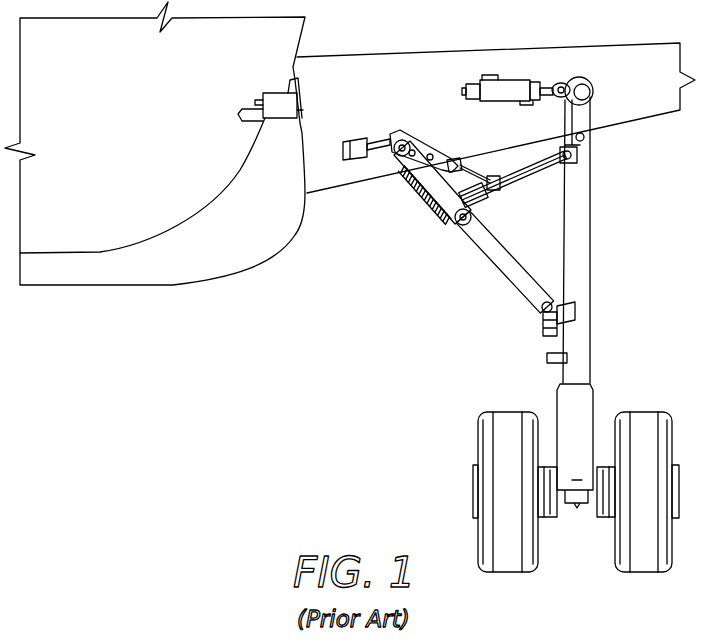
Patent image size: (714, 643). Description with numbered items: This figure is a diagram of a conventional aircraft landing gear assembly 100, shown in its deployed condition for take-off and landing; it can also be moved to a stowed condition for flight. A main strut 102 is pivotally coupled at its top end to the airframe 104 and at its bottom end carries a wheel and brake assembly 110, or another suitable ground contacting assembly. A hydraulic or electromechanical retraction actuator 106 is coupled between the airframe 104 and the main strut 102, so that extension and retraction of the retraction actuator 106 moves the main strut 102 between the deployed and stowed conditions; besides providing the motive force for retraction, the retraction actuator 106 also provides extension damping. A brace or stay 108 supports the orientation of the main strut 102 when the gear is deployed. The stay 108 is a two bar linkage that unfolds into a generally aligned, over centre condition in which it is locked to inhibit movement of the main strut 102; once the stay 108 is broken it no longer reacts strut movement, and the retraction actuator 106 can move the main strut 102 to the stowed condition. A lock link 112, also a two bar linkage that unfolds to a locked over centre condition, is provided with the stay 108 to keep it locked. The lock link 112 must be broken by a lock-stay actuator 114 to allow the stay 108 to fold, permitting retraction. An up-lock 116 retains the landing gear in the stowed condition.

The aircraft landing gear assembly 100 is at (605, 72).
The main strut 102 is at (592, 217).
The airframe 104 is at (388, 77).
The retraction actuator 106 is at (513, 85).
The stay 108 is at (492, 267).
The wheel and brake assembly 110 is at (593, 417).
The lock link 112 is at (500, 187).
The lock-stay actuator 114 is at (453, 157).
The up-lock 116 is at (263, 100).